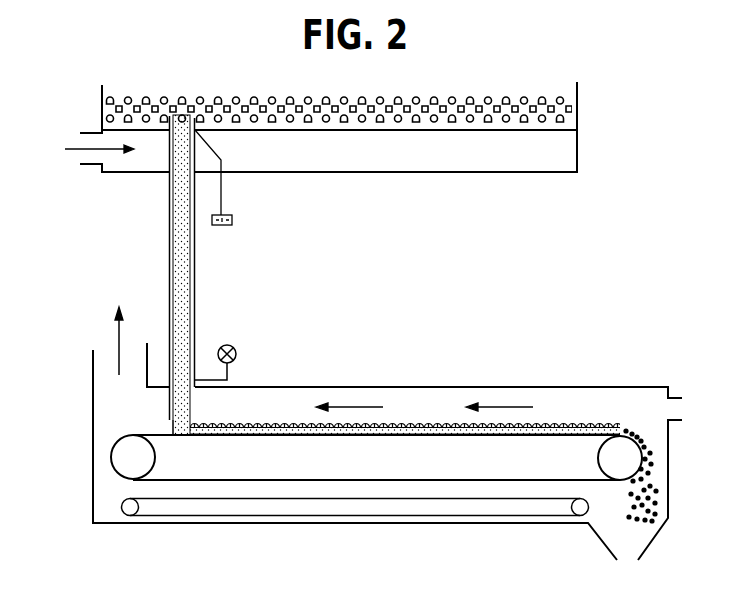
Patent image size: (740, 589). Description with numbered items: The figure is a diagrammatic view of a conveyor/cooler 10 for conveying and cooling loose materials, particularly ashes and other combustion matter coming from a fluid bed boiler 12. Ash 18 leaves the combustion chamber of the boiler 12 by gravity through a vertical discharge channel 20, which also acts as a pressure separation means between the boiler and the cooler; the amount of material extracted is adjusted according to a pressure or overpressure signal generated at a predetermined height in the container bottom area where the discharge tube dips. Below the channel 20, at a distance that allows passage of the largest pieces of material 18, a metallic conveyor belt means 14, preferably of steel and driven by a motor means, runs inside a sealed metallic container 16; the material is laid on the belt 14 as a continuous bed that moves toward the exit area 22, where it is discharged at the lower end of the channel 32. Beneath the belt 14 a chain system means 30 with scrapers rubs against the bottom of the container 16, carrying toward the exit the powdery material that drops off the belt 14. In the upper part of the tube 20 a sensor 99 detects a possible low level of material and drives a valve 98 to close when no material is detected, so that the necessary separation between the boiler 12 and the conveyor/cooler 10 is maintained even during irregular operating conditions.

The conveyor/cooler 10 is at (560, 280).
The fluid bed boiler 12 is at (578, 112).
The metallic conveyor belt means 14 is at (165, 482).
The sealed metallic container 16 is at (512, 386).
The ash 18 is at (405, 422).
The vertical discharge channel 20 is at (169, 275).
The exit area 22 is at (657, 505).
The chain system means 30 is at (487, 508).
The column outlet 32 is at (172, 431).
The valve 98 is at (237, 352).
The sensor 99 is at (231, 225).